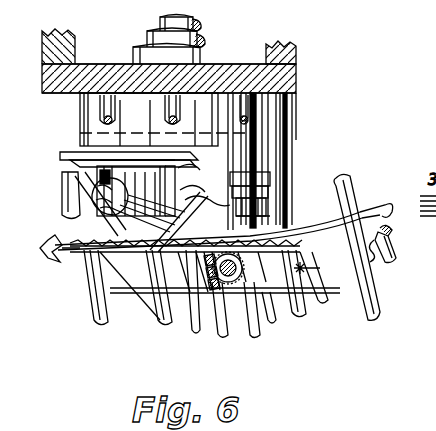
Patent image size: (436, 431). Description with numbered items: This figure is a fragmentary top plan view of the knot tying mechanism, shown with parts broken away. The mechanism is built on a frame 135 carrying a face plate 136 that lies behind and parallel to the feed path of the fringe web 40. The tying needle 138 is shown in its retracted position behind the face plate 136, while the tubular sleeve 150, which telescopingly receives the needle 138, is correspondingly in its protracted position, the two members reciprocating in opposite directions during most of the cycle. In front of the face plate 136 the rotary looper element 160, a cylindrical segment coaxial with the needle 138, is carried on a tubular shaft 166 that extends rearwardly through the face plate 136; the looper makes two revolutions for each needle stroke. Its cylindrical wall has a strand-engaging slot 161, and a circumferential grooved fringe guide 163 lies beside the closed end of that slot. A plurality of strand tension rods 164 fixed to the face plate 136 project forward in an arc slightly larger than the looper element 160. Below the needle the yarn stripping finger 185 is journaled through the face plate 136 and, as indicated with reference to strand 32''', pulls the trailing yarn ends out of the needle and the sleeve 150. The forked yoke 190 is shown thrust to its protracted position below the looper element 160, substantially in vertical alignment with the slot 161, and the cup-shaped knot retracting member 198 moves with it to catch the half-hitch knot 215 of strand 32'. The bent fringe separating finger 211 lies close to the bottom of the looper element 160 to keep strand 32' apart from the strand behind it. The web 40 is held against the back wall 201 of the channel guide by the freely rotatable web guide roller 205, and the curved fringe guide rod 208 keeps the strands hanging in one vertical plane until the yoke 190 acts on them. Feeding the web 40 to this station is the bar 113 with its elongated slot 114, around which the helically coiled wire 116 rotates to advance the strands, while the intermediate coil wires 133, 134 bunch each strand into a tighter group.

The frame 135 is at (292, 68).
The face plate 136 is at (254, 56).
The tying needle 138 is at (164, 23).
The tubular sleeve 150 is at (150, 35).
The tubular shaft 166 is at (133, 52).
The strand tension rods 164 is at (165, 108).
The looper element 160 is at (255, 143).
The yarn stripping finger 185 is at (62, 150).
The fringe strand 32''' is at (48, 190).
The knot retracting member 198 is at (136, 191).
The half-hitch knot 215 is at (103, 202).
The web 40 is at (70, 262).
The strand-engaging slot 161 is at (210, 168).
The fringe strand 32' is at (276, 181).
The grooved fringe guide 163 is at (262, 206).
The back wall 201 is at (52, 250).
The fringe guide rod 208 is at (390, 205).
The bar 113 is at (350, 280).
The helically coiled wire 116 is at (372, 318).
The elongated slot 114 is at (388, 262).
The yoke 190 is at (128, 287).
The web guide roller 205 is at (214, 322).
The intermediate coil wire 133 is at (194, 316).
The fringe separating finger 211 is at (258, 322).
The intermediate coil wire 134 is at (286, 318).